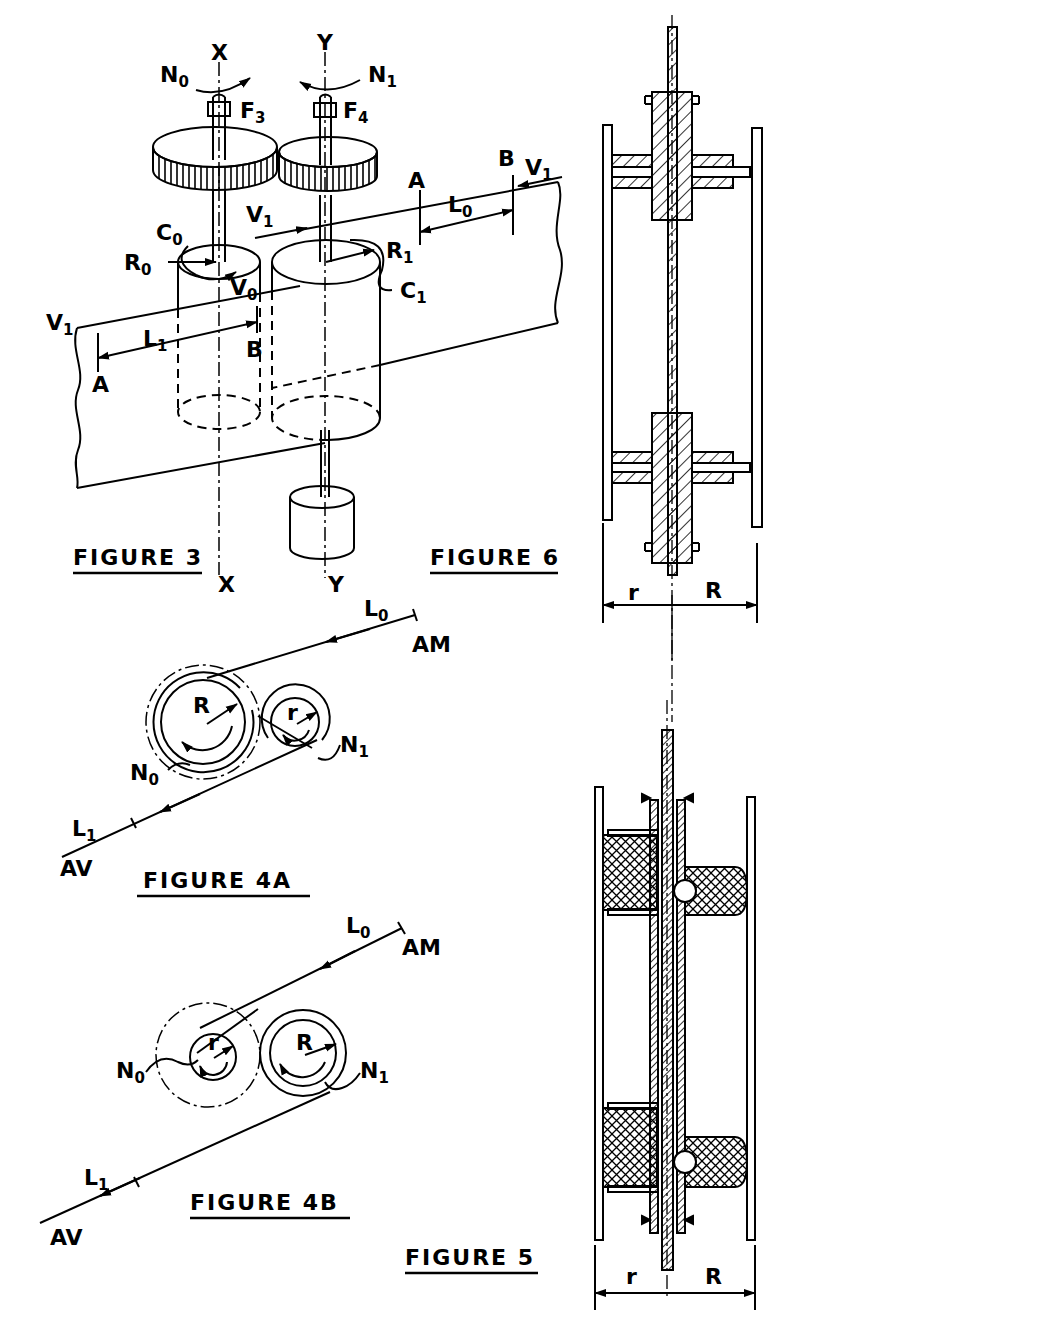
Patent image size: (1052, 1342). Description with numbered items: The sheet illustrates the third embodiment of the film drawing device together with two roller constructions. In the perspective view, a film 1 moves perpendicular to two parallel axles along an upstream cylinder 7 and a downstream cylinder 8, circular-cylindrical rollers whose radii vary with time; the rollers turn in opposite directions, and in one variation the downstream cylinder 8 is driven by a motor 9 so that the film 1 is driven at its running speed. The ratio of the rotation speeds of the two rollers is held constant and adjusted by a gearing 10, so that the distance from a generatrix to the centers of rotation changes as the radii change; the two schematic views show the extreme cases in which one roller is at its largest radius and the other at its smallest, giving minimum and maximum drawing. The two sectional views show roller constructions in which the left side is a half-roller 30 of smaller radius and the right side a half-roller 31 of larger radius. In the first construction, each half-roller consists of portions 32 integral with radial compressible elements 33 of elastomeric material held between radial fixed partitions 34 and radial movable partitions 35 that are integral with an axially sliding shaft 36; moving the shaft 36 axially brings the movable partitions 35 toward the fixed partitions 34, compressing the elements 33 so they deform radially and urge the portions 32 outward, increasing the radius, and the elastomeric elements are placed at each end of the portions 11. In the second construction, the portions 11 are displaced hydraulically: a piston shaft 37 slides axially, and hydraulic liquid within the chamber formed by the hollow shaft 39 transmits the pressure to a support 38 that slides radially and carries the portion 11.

In FIG. 3, the film 1 is at (80, 448).
In FIG. 3, the upstream cylinder 7 is at (197, 296).
In FIG. 3, the downstream cylinder 8 is at (384, 263).
In FIG. 3, the motor 9 is at (345, 527).
In FIG. 3, the gearing 10 is at (372, 150).
In FIG. 6, the portions 11 is at (762, 223).
In FIG. 5, the portions 11 is at (755, 927).
In FIG. 6, the half-roller 30 is at (667, 632).
In FIG. 5, the half-roller 30 is at (635, 691).
In FIG. 6, the half-roller 31 is at (757, 632).
In FIG. 5, the half-roller 31 is at (715, 691).
In FIG. 6, the portions 32 is at (603, 420).
In FIG. 5, the portions 32 is at (598, 1005).
In FIG. 5, the radial compressible elements 33 is at (603, 882).
In FIG. 5, the radial fixed partitions 34 is at (622, 1190).
In FIG. 5, the radial movable partitions 35 is at (630, 834).
In FIG. 5, the shaft 36 is at (676, 783).
In FIG. 6, the piston shaft 37 is at (678, 72).
In FIG. 6, the support 38 is at (750, 180).
In FIG. 6, the hollow shaft 39 is at (697, 142).